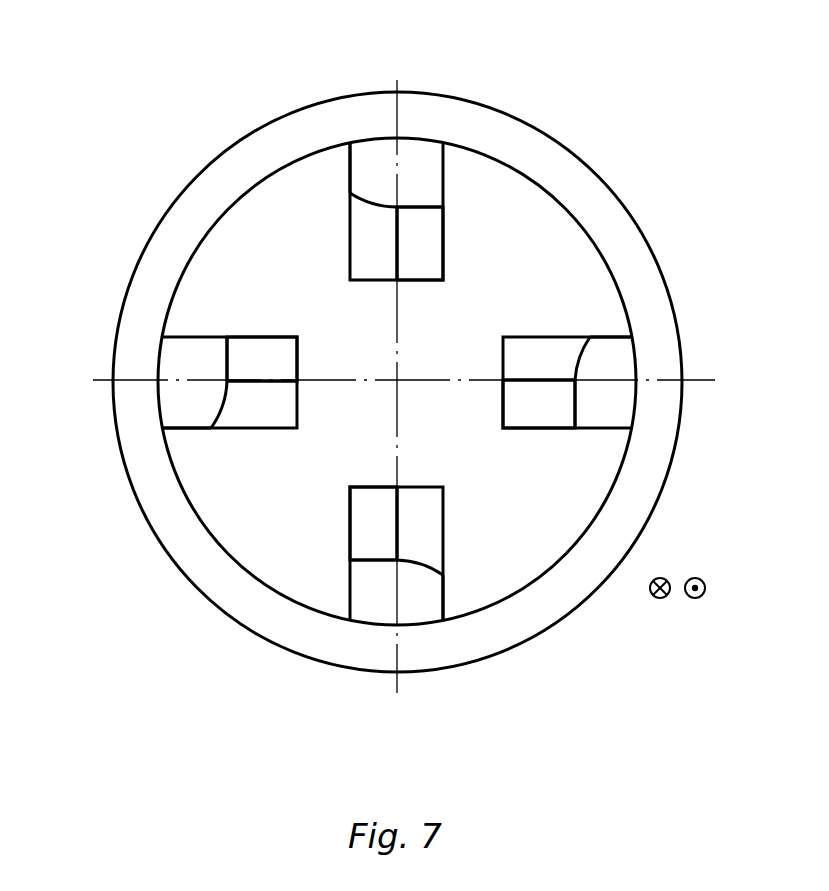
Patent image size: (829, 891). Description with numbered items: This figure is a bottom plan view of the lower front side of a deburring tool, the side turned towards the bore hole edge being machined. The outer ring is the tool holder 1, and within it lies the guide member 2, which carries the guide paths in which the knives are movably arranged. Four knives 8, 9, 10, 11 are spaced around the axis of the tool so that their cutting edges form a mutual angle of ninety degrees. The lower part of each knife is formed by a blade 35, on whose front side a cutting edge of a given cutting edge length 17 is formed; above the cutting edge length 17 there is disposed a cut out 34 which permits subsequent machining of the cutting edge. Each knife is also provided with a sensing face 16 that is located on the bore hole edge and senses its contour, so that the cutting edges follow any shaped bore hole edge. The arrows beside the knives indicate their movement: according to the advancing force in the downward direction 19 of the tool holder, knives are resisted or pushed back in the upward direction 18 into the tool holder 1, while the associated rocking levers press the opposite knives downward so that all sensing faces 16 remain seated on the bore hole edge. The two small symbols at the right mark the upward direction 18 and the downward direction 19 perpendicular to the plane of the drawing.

The tool holder 1 is at (293, 623).
The guide member 2 is at (253, 530).
The cutting knife 8 is at (240, 333).
The knife 9 is at (445, 590).
The knife 10 is at (577, 432).
The knife 11 is at (448, 203).
The sensing face 16 is at (377, 170).
The cutting edge length 17 is at (413, 205).
The upward direction 18 is at (659, 601).
The downward direction 19 is at (696, 601).
The cut out 34 is at (370, 243).
The blade 35 is at (423, 253).